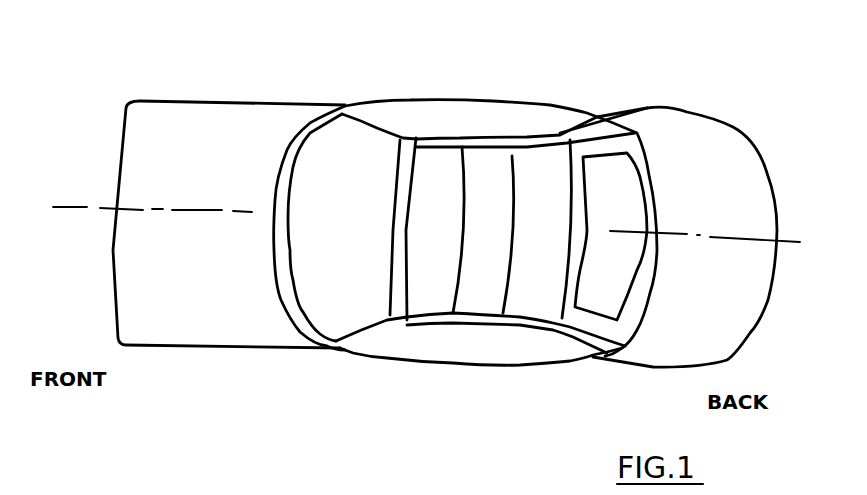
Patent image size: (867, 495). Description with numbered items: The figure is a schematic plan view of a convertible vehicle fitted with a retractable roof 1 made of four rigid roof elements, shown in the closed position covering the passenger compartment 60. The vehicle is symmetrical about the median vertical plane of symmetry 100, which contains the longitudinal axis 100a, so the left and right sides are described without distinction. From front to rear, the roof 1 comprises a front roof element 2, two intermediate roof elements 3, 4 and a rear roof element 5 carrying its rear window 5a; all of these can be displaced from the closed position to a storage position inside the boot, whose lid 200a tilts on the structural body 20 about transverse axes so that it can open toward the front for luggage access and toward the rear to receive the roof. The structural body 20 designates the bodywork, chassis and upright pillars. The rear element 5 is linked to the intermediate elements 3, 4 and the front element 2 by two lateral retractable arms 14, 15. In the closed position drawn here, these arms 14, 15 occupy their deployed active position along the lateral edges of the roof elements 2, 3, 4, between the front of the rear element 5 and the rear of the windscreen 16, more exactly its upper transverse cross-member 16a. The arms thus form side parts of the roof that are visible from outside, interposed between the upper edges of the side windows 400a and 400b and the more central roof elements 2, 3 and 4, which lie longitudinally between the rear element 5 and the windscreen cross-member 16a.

The retractable roof 1 is at (553, 98).
The front roof element 2 is at (398, 118).
The intermediate roof element 3 is at (487, 167).
The intermediate roof element 4 is at (532, 170).
The rear roof element 5 is at (627, 168).
The rear window 5a is at (630, 212).
The lateral retractable arm 14 is at (477, 323).
The lateral retractable arm 15 is at (427, 150).
The windscreen 16 is at (343, 300).
The upper transverse element of the windscreen 16a is at (389, 213).
The structural body 20 is at (211, 346).
The passenger compartment 60 is at (420, 342).
The median vertical plane of symmetry 100 is at (73, 203).
The longitudinal axis 100a is at (135, 212).
The lid of the boot 200a is at (688, 128).
The side window 400a is at (457, 333).
The side window 400b is at (393, 106).